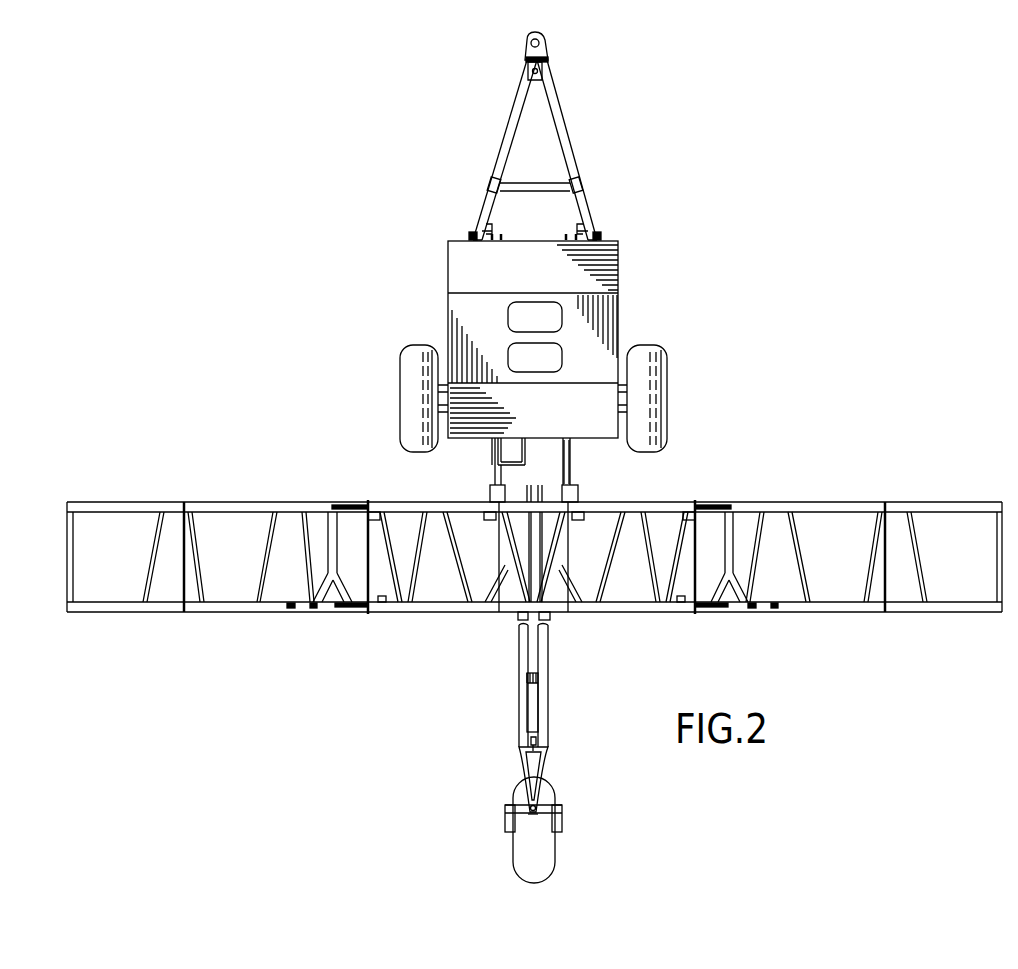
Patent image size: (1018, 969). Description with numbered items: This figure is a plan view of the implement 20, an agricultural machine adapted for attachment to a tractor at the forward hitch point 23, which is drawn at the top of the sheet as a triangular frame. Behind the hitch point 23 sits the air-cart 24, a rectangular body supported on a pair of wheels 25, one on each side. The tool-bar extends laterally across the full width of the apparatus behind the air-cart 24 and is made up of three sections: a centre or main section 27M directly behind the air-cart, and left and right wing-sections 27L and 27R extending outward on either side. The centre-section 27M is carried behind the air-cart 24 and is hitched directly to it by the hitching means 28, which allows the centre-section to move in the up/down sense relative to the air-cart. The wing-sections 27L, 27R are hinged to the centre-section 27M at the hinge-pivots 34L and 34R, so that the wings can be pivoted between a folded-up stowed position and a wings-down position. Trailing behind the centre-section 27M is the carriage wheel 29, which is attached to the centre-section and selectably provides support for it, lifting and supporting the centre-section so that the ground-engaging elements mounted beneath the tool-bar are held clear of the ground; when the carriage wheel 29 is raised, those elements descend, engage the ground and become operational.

The implement 20 is at (740, 298).
The attachment to tractor 23 is at (541, 45).
The air-cart 24 is at (618, 273).
The wheels 25 is at (660, 381).
The left wing-section 27L is at (214, 501).
The centre-section 27M is at (455, 501).
The right wing-section 27R is at (843, 501).
The hitching means 28 is at (572, 462).
The carriage wheel 29 is at (550, 849).
The left hinge-pivot 34L is at (367, 501).
The right hinge-pivot 34R is at (696, 501).